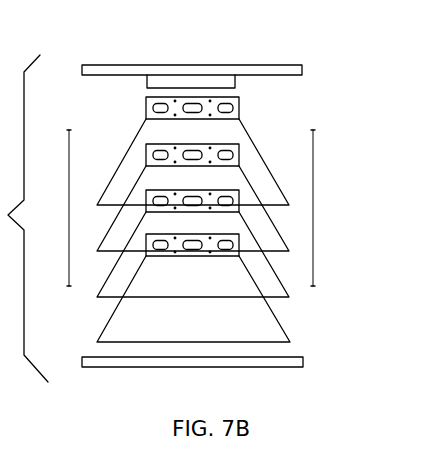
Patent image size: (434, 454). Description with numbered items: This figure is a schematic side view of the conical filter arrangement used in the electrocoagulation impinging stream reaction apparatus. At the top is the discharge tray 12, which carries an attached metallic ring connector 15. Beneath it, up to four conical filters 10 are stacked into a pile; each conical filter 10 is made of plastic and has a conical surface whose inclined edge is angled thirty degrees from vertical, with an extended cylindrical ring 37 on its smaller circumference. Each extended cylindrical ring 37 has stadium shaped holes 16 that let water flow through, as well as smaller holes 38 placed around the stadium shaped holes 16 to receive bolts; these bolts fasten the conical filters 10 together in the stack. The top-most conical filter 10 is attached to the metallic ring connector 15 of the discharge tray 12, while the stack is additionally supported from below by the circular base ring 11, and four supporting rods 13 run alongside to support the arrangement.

The conical filter 10 is at (278, 320).
The circular base ring 11 is at (300, 358).
The discharge tray 12 is at (300, 67).
The supporting rod 13 is at (313, 213).
The metallic ring connector 15 is at (226, 82).
The stadium shaped hole 16 is at (228, 246).
The extended cylindrical ring 37 is at (224, 155).
The smaller hole 38 is at (239, 116).